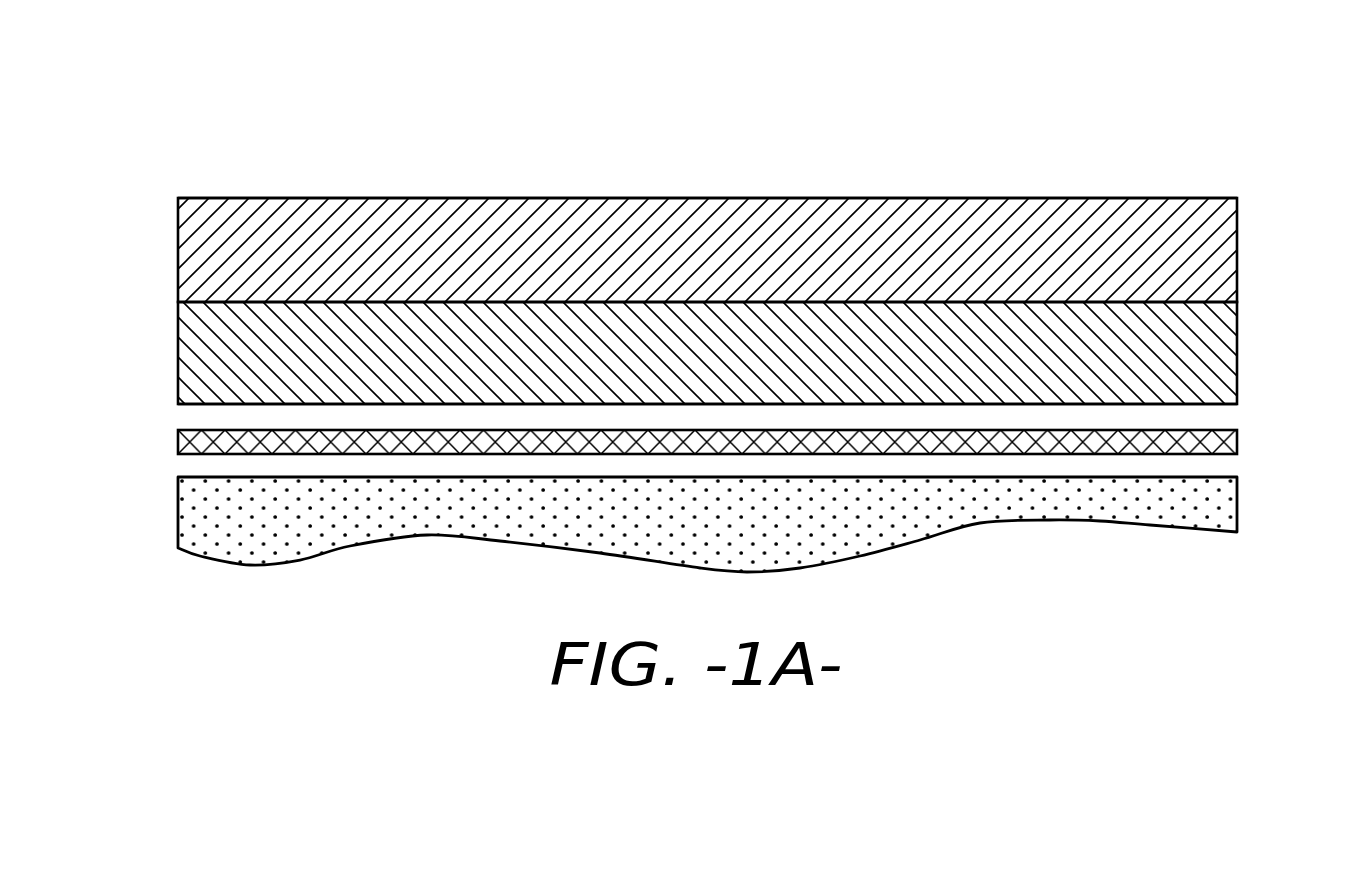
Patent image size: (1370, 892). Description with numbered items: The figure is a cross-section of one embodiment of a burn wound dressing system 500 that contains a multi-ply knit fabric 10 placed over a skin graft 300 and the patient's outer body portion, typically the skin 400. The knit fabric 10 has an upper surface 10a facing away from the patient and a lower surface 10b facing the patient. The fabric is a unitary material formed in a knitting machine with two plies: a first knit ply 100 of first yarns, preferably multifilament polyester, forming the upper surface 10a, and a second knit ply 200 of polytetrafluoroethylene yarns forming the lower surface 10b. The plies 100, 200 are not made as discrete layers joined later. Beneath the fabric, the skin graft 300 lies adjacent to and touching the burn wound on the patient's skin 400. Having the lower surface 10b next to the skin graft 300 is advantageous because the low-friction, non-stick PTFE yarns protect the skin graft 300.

The burn wound dressing system 500 is at (1104, 138).
The multi-ply knit fabric 10 is at (721, 296).
The upper surface 10a is at (1264, 191).
The lower surface 10b is at (1264, 412).
The first knit ply 100 is at (202, 240).
The second knit ply 200 is at (202, 347).
The skin graft 300 is at (190, 442).
The patient's skin 400 is at (202, 513).